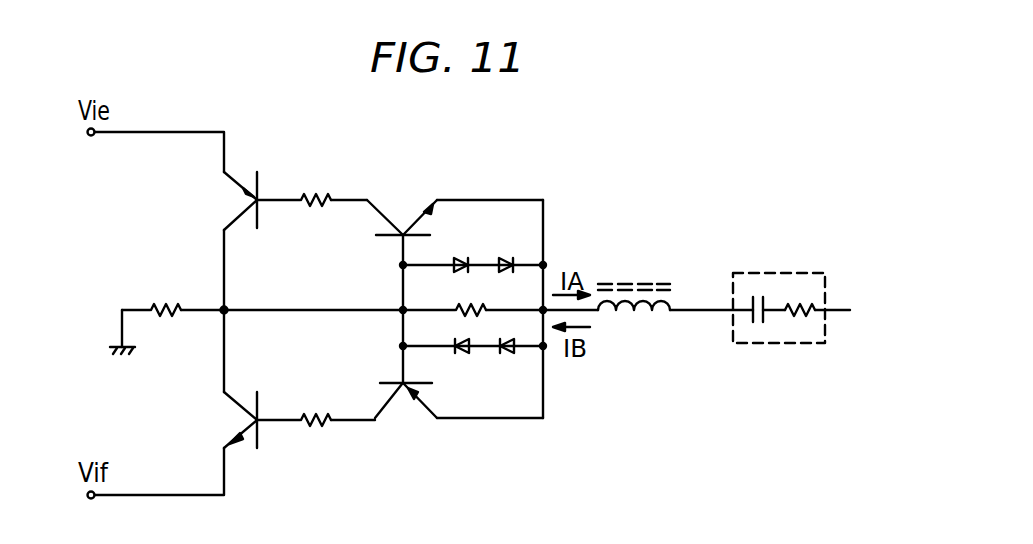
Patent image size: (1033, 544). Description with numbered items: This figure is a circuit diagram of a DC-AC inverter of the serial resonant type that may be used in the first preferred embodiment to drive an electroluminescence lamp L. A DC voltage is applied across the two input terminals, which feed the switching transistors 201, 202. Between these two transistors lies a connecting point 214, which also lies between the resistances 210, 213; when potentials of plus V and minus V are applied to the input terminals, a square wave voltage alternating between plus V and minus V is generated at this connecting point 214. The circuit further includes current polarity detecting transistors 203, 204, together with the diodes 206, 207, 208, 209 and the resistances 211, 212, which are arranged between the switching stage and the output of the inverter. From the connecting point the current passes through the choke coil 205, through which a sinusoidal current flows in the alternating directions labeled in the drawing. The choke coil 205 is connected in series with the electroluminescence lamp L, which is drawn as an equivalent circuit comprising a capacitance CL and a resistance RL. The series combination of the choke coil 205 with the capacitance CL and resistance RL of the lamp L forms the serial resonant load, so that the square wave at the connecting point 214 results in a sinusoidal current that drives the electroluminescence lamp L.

The switching transistor 201 is at (245, 201).
The switching transistor 202 is at (244, 420).
The current polarity detecting transistor 203 is at (455, 201).
The current polarity detecting transistor 204 is at (459, 417).
The choke coil 205 is at (627, 314).
The diode 206 is at (466, 249).
The diode 207 is at (508, 258).
The diode 208 is at (460, 363).
The diode 209 is at (508, 357).
The resistance 210 is at (173, 292).
The resistance 211 is at (333, 183).
The resistance 212 is at (337, 403).
The resistance 213 is at (473, 296).
The connecting point 214 is at (233, 306).
The electroluminescence lamp L is at (737, 272).
The resistance RL is at (800, 292).
The capacitance CL is at (766, 325).